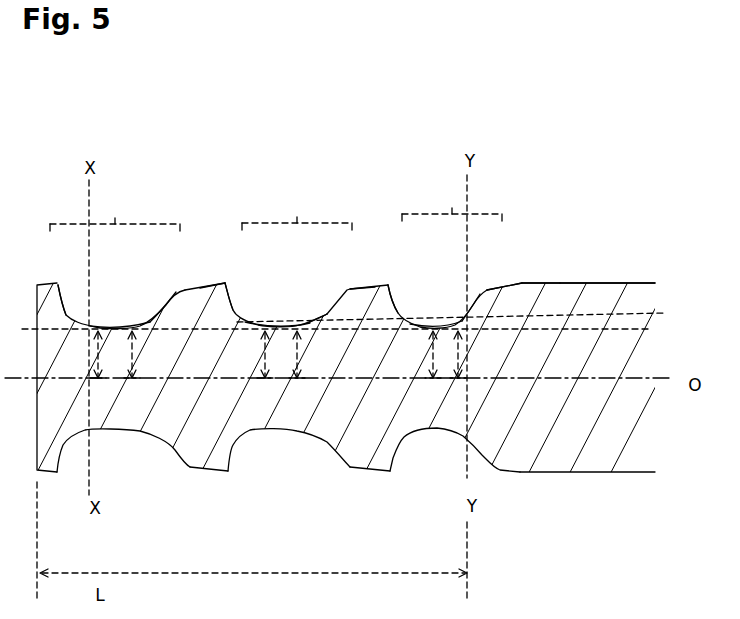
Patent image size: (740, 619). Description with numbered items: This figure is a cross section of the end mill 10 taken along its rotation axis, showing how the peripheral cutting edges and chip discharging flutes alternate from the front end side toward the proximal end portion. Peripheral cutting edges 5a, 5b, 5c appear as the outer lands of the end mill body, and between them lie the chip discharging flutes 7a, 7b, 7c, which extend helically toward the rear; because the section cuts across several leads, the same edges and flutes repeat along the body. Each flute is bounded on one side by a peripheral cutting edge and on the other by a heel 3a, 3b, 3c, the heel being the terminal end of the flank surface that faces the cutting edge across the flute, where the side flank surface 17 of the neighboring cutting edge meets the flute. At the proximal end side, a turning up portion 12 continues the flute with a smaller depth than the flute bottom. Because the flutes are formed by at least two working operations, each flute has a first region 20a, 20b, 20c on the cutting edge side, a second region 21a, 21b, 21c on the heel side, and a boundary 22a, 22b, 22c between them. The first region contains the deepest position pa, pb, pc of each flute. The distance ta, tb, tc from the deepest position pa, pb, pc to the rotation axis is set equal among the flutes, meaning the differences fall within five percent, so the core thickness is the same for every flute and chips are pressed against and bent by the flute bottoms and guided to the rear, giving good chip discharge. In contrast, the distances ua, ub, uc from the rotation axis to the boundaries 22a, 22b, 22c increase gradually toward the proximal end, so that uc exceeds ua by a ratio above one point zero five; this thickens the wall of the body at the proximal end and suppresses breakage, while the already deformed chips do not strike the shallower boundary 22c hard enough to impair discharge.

The peripheral cutting edge 5a is at (57, 283).
The peripheral cutting edge 5b is at (228, 292).
The peripheral cutting edge 5c is at (394, 300).
The chip discharging flute 7a is at (115, 213).
The chip discharging flute 7b is at (297, 212).
The chip discharging flute 7c is at (452, 204).
The side flank surface 17 is at (210, 285).
The heel 3a is at (187, 288).
The heel 3b is at (347, 288).
The heel 3c is at (493, 283).
The first region 20a is at (63, 300).
The second region 21a is at (157, 318).
The first region 20b is at (240, 315).
The second region 21b is at (328, 316).
The first region 20c is at (405, 320).
The second region 21c is at (478, 300).
The boundary 22a is at (128, 324).
The boundary 22b is at (297, 321).
The boundary 22c is at (458, 323).
The turning up portion 12 is at (512, 283).
The end mill 10 is at (587, 281).
The deepest position pa is at (114, 341).
The deepest position pb is at (281, 341).
The deepest position pc is at (441, 340).
The distance ta is at (103, 357).
The distance ua is at (133, 356).
The distance tb is at (267, 353).
The distance ub is at (302, 353).
The distance tc is at (435, 353).
The distance uc is at (462, 352).